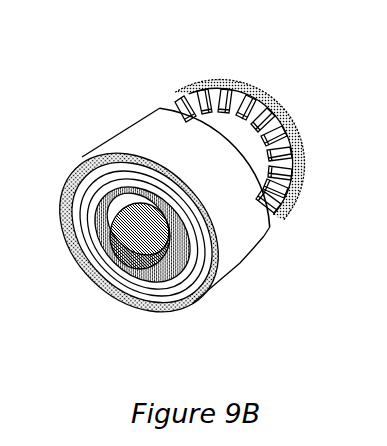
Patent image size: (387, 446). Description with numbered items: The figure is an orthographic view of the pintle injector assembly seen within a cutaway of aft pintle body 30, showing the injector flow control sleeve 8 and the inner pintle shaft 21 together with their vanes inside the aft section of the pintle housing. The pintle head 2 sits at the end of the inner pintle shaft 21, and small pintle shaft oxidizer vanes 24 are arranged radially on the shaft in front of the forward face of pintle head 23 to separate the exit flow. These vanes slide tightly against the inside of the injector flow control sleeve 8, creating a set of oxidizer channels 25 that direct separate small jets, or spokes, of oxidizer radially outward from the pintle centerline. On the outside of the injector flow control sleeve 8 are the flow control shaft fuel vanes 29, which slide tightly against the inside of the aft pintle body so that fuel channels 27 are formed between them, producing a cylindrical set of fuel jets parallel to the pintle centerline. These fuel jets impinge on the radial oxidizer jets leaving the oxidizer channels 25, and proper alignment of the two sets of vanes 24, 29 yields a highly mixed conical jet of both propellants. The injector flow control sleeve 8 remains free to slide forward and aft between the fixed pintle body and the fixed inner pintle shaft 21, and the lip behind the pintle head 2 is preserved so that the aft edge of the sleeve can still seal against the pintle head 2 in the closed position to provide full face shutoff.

The pintle head 2 is at (288, 90).
The injector flow control sleeve 8 is at (92, 278).
The inner pintle shaft 21 is at (166, 291).
The forward face of pintle head 23 is at (290, 150).
The pintle shaft oxidizer vanes 24 is at (239, 91).
The oxidizer channel 25 is at (137, 301).
The fuel channel 27 is at (61, 213).
The flow control shaft fuel vanes 29 is at (280, 221).
The cutaway of aft pintle body 30 is at (252, 275).